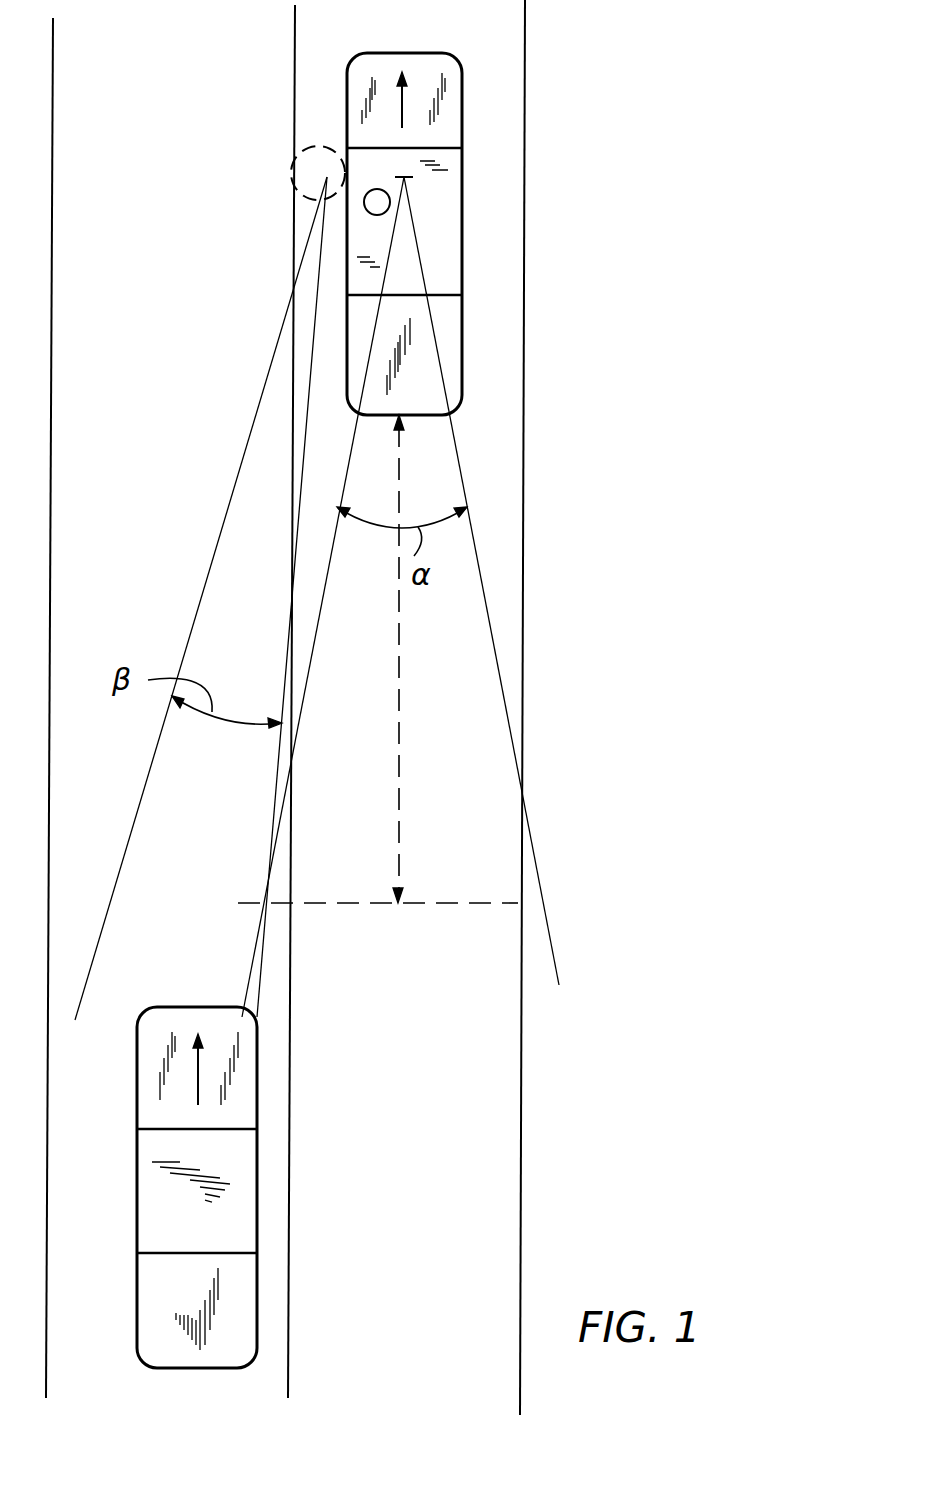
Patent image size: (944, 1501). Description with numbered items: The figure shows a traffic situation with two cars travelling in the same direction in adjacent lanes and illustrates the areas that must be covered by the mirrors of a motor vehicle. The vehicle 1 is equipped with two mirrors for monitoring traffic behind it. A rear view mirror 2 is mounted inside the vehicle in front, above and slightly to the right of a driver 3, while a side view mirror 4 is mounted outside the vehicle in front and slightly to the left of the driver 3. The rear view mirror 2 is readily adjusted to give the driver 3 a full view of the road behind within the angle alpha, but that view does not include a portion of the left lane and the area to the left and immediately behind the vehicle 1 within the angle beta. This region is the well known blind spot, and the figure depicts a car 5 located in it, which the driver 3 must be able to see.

The vehicle 1 is at (452, 98).
The rear view mirror 2 is at (412, 167).
The driver 3 is at (374, 212).
The side view mirror 4 is at (292, 176).
The car 5 is at (163, 1183).